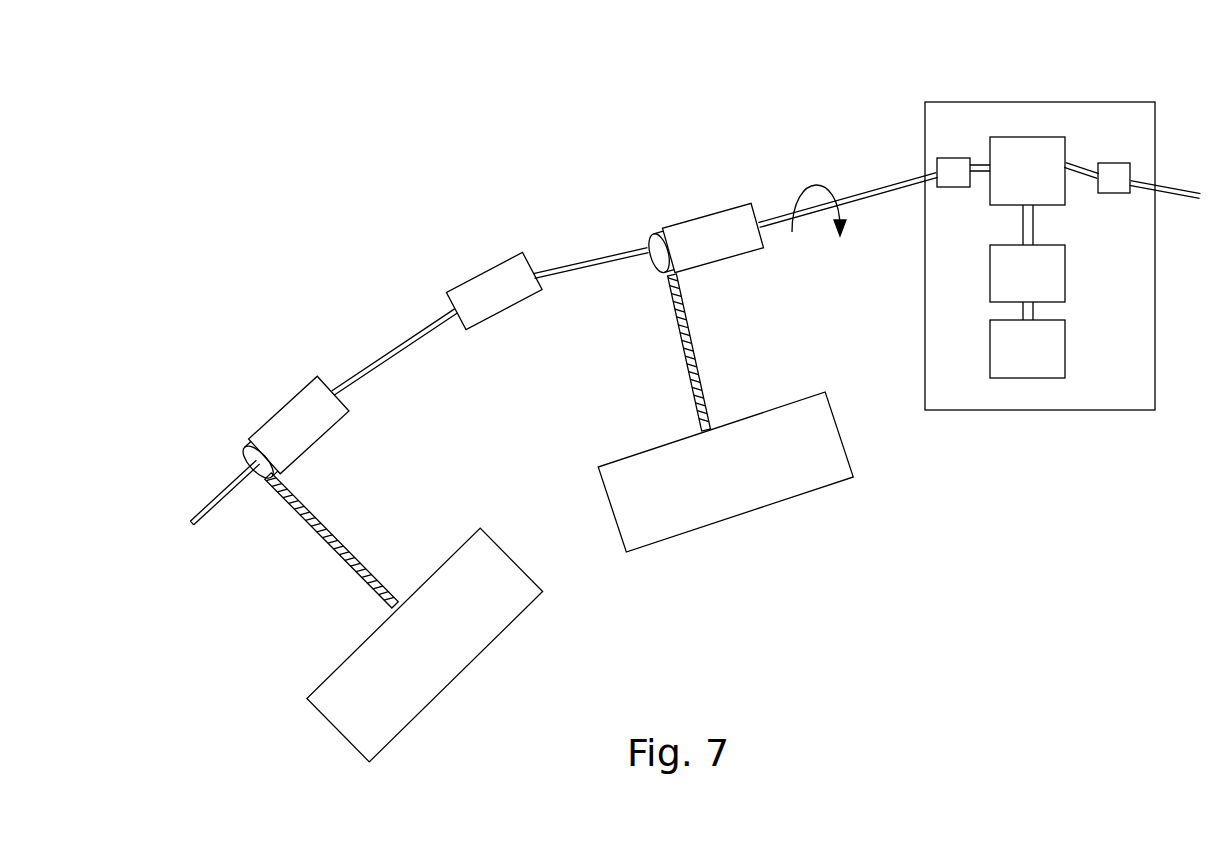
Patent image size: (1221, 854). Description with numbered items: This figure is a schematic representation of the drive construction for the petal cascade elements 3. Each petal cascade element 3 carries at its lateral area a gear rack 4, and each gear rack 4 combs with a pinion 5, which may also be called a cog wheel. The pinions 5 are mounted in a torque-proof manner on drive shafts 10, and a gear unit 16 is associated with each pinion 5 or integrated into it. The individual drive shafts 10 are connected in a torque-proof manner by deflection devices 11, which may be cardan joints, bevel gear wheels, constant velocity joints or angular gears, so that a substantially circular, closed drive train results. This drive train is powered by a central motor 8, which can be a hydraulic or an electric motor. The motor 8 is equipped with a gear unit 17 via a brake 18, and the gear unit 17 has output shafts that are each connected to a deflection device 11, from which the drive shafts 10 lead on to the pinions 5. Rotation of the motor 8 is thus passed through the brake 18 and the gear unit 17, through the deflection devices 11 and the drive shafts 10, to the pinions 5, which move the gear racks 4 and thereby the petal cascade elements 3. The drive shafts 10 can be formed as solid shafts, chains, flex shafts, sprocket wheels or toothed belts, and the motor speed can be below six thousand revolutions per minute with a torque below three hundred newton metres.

The petal cascade element 3 is at (622, 498).
The gear rack 4 is at (317, 517).
The pinion 5 is at (255, 457).
The motor 8 is at (1027, 349).
The drive shaft 10 is at (218, 507).
The deflection device 11 is at (400, 208).
The gear unit 16 is at (293, 405).
The gear unit 17 is at (1027, 171).
The brake 18 is at (1027, 273).